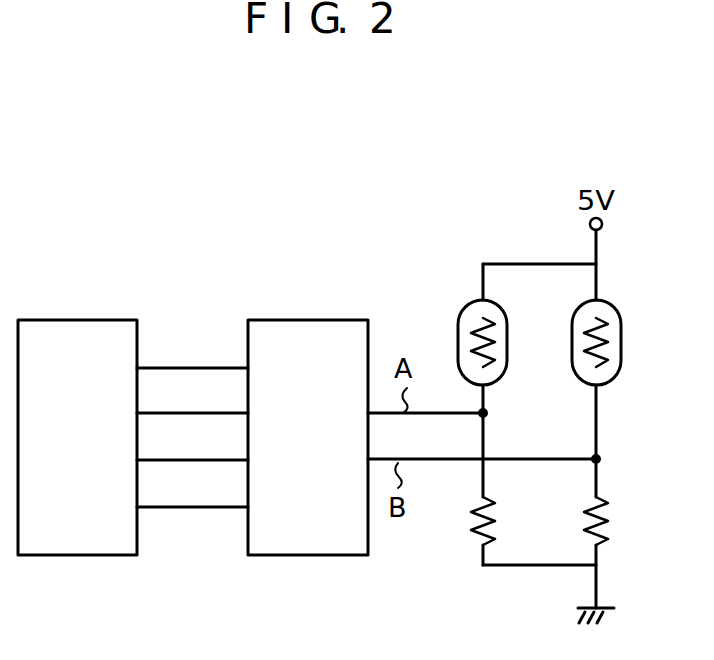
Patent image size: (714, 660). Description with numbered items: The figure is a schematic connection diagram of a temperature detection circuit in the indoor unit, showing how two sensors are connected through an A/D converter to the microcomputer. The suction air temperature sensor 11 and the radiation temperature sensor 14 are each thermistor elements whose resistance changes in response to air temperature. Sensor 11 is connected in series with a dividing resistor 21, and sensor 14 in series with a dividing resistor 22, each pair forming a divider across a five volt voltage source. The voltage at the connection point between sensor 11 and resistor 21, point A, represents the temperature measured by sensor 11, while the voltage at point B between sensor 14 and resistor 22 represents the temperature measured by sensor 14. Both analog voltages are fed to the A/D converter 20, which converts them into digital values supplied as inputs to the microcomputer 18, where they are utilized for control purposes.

The suction air temperature sensor 11 is at (458, 330).
The radiation temperature sensor 14 is at (622, 335).
The microcomputer 18 is at (102, 556).
The A/D converter 20 is at (327, 556).
The dividing resistor 21 is at (477, 532).
The dividing resistor 22 is at (605, 522).